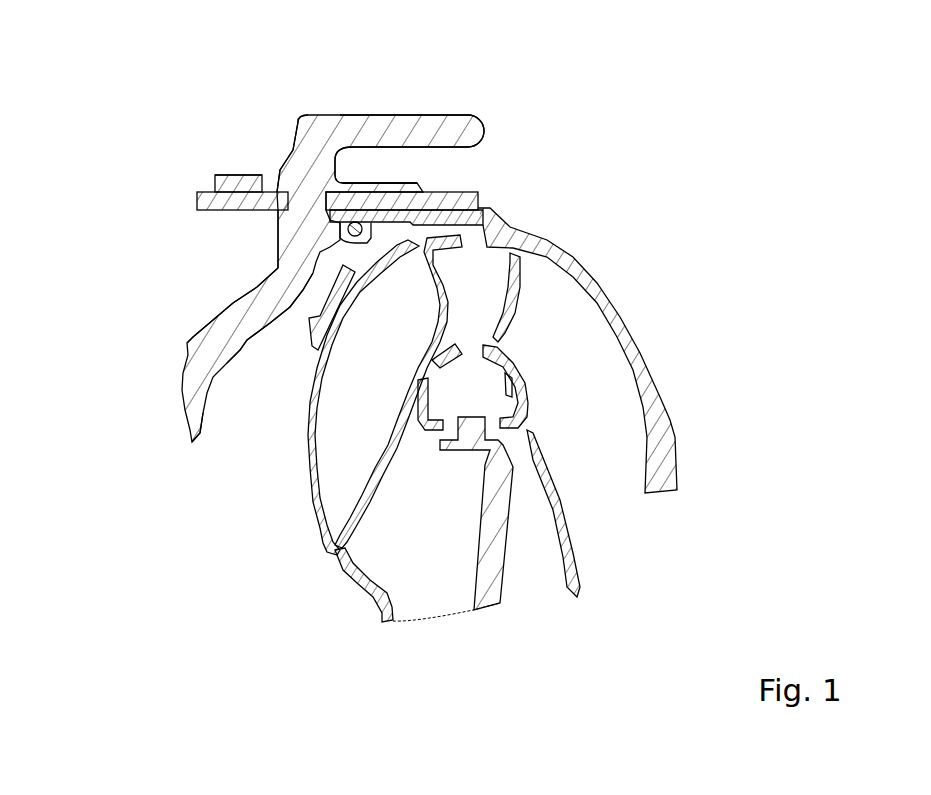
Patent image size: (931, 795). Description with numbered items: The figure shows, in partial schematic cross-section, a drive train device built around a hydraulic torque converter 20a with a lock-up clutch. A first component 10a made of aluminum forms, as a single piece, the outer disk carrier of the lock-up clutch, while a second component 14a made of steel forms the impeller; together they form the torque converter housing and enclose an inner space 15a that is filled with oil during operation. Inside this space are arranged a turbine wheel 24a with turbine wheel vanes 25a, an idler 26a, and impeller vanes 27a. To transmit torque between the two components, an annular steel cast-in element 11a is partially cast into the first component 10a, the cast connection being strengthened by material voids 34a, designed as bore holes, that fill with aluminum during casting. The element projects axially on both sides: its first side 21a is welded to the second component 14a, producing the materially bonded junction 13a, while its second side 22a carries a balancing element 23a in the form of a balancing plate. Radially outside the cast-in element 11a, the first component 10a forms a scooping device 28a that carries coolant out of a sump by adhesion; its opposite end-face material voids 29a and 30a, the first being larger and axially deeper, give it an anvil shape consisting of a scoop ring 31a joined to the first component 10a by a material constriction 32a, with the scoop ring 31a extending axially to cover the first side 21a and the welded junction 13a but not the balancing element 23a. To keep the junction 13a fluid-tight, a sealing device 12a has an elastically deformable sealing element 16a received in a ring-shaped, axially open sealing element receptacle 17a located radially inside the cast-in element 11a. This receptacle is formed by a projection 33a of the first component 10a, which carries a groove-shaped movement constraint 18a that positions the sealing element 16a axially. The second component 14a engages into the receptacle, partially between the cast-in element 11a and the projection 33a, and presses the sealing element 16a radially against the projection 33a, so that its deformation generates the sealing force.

The first component 10a is at (205, 320).
The cast-in element 11a is at (200, 194).
The sealing device 12a is at (373, 260).
The junction 13a is at (284, 142).
The second component 14a is at (600, 267).
The inner space 15a is at (238, 437).
The sealing element 16a is at (330, 225).
The sealing element receptacle 17a is at (326, 227).
The movement constraint 18a is at (277, 267).
The torque converter 20a is at (552, 419).
The first side 21a is at (470, 184).
The second side 22a is at (192, 179).
The balancing element 23a is at (247, 174).
The turbine wheel 24a is at (312, 392).
The turbine wheel vanes 25a is at (368, 497).
The idler 26a is at (475, 445).
The impeller vanes 27a is at (515, 360).
The scooping device 28a is at (491, 117).
The first end-face material void 29a is at (455, 162).
The second end-face material void 30a is at (287, 145).
The scoop ring 31a is at (430, 113).
The material constriction 32a is at (313, 182).
The projection 33a is at (368, 235).
The material voids 34a is at (283, 168).